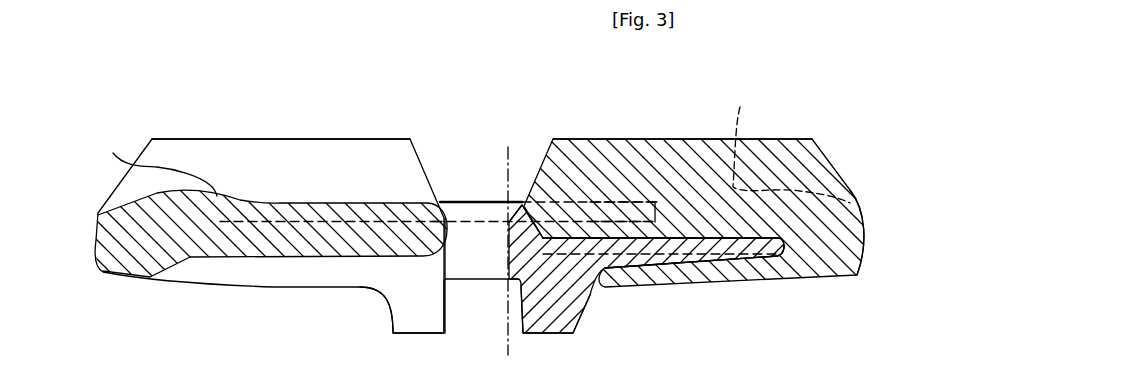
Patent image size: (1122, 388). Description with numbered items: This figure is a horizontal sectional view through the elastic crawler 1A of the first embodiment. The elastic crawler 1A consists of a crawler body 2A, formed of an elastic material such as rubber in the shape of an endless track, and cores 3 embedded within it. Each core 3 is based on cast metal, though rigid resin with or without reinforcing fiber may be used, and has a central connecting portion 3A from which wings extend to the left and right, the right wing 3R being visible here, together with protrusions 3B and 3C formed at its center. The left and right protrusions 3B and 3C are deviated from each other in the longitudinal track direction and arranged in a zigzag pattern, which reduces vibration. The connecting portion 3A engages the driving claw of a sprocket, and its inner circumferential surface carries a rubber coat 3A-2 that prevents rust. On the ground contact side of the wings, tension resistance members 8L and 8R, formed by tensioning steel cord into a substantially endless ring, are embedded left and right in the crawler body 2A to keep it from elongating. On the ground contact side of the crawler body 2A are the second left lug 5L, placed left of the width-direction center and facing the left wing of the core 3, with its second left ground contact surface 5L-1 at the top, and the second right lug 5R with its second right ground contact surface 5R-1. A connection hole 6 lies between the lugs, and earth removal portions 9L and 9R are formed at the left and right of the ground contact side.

The elastic crawler 1A is at (524, 72).
The crawler body 2A is at (852, 178).
The core 3 is at (563, 299).
The connecting portion 3A is at (533, 203).
The rubber coat 3A-2 is at (500, 203).
The left protrusion 3B is at (413, 322).
The right protrusion 3C is at (562, 322).
The right wing 3R is at (713, 258).
The second left lug 5L is at (280, 139).
The second left ground contact surface 5L-1 is at (190, 139).
The second right lug 5R is at (667, 139).
The second right ground contact surface 5R-1 is at (780, 139).
The connection hole 6 is at (478, 272).
The left tension resistance member 8L is at (323, 223).
The right tension resistance member 8R is at (655, 221).
The left earth removal portion 9L is at (157, 164).
The right earth removal portion 9R is at (789, 146).